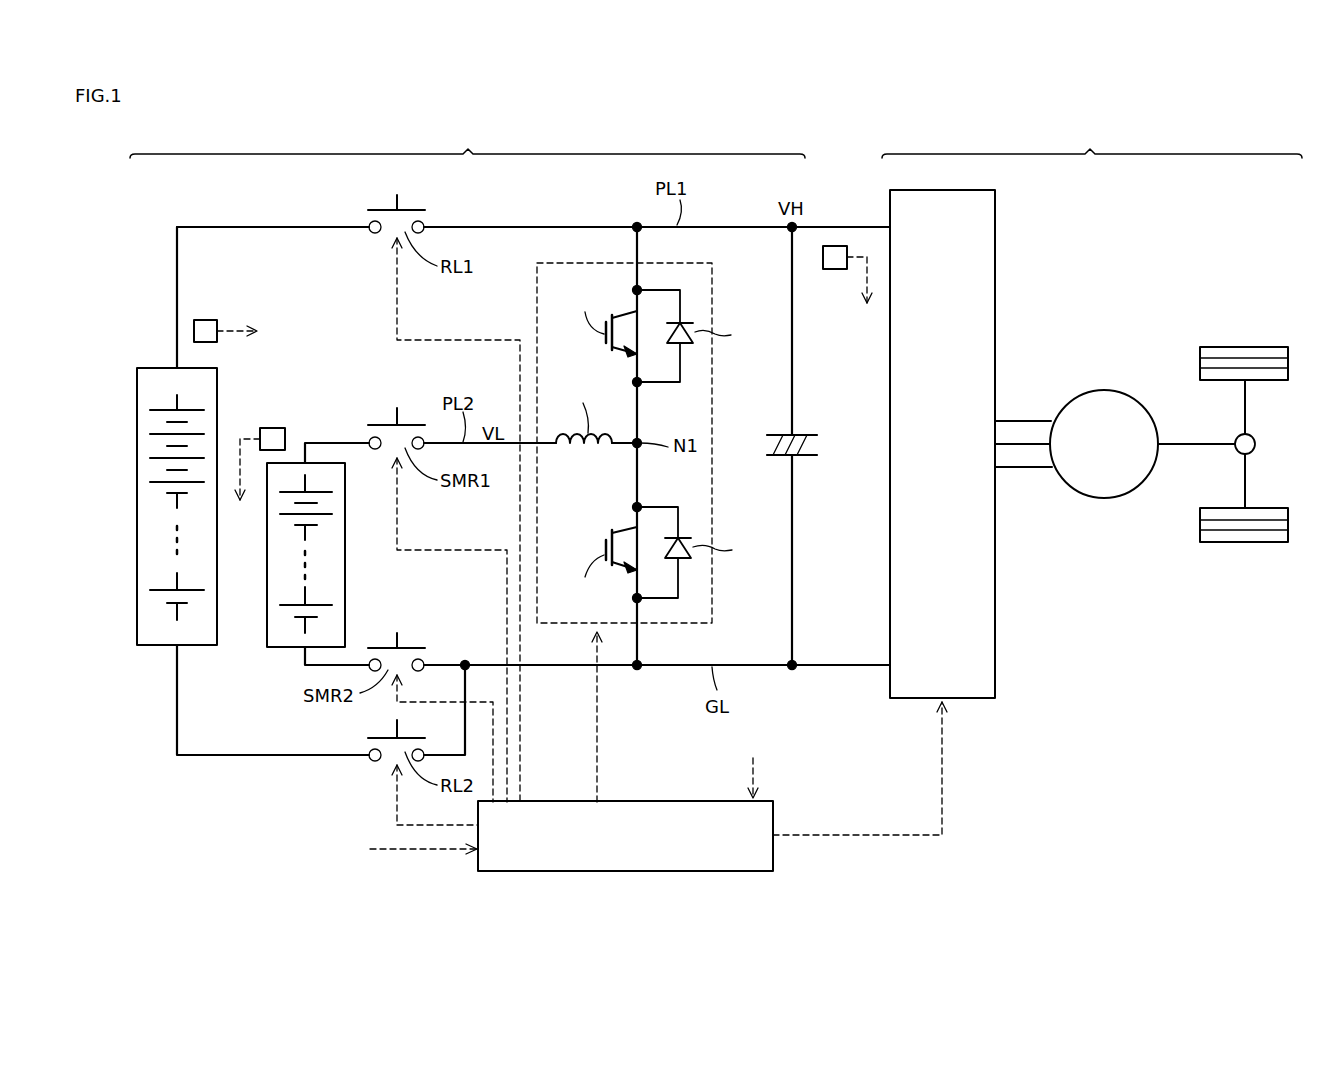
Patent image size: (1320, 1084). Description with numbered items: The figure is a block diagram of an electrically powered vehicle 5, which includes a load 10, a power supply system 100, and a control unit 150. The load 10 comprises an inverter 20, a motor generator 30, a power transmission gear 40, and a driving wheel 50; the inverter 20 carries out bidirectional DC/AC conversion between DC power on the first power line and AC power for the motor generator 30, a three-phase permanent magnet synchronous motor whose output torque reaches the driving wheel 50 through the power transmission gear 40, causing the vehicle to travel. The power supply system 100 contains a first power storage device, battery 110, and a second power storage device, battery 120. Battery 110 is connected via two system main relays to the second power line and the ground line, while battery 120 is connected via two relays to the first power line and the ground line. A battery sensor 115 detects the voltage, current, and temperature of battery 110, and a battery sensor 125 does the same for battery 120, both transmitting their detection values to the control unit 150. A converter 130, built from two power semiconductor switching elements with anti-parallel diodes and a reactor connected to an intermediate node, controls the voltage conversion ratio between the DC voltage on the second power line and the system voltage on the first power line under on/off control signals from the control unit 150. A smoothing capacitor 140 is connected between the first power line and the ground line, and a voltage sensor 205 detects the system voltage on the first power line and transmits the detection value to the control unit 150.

The electrically powered vehicle 5 is at (198, 790).
The load 10 is at (1092, 143).
The inverter 20 is at (953, 190).
The motor generator 30 is at (1100, 498).
The power transmission gear 40 is at (1256, 446).
The driving wheel 50 is at (1252, 347).
The power supply system 100 is at (467, 143).
The power storage device (battery) 110 is at (345, 584).
The battery sensor 115 is at (275, 428).
The power storage device (battery) 120 is at (156, 368).
The battery sensor 125 is at (206, 320).
The converter 130 is at (712, 595).
The smoothing capacitor 140 is at (825, 440).
The control unit 150 is at (667, 798).
The voltage sensor 205 is at (835, 270).